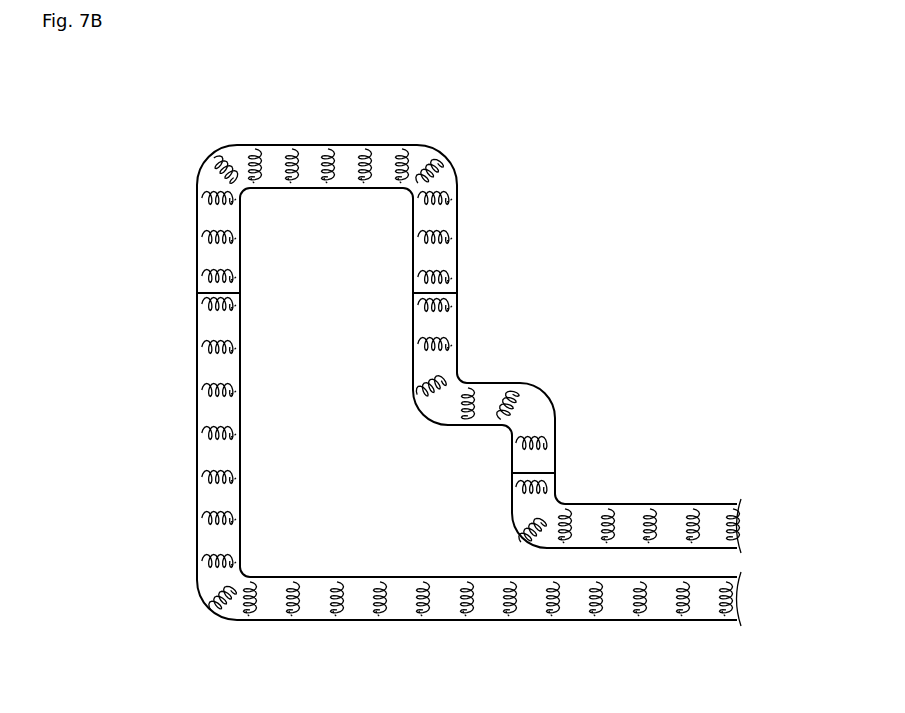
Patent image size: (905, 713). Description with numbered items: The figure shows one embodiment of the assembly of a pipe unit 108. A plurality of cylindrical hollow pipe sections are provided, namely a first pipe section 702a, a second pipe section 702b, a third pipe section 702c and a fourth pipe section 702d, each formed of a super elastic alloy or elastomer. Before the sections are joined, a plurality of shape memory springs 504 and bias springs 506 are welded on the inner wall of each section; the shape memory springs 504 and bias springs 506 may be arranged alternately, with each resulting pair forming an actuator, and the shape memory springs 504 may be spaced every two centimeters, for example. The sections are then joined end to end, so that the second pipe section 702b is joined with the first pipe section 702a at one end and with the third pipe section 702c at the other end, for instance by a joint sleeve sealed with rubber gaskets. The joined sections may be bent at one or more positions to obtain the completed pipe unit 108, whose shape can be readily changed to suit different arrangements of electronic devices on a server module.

The pipe unit 108 is at (185, 457).
The shape memory springs 504 is at (292, 148).
The bias springs 506 is at (258, 150).
The first pipe section 702a is at (240, 492).
The second pipe section 702b is at (197, 212).
The third pipe section 702c is at (412, 322).
The fourth pipe section 702d is at (723, 503).